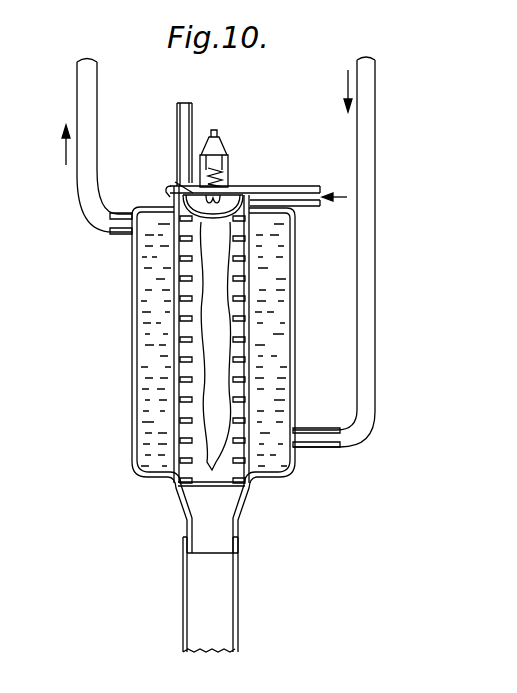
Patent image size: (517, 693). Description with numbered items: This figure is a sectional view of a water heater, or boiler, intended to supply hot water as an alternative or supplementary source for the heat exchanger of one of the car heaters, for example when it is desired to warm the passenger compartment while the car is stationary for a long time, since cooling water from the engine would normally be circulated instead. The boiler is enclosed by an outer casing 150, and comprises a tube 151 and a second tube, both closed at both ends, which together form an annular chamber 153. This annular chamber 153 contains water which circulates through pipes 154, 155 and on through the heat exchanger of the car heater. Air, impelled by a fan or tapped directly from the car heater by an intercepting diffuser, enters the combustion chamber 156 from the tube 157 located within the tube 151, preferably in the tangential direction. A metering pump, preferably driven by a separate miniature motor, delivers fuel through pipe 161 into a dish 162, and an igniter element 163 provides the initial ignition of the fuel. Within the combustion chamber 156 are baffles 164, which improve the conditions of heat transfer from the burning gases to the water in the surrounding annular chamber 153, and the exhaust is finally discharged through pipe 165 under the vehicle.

The outer casing 150 is at (130, 258).
The tube 151 is at (248, 337).
The annular chamber 153 is at (145, 306).
The pipe 154 is at (366, 162).
The pipe 155 is at (80, 93).
The combustion chamber 156 is at (210, 344).
The tube 157 is at (323, 172).
The pipe 161 is at (178, 113).
The dish 162 is at (250, 224).
The igniter element 163 is at (228, 185).
The baffles 164 is at (180, 492).
The pipe 165 is at (210, 577).